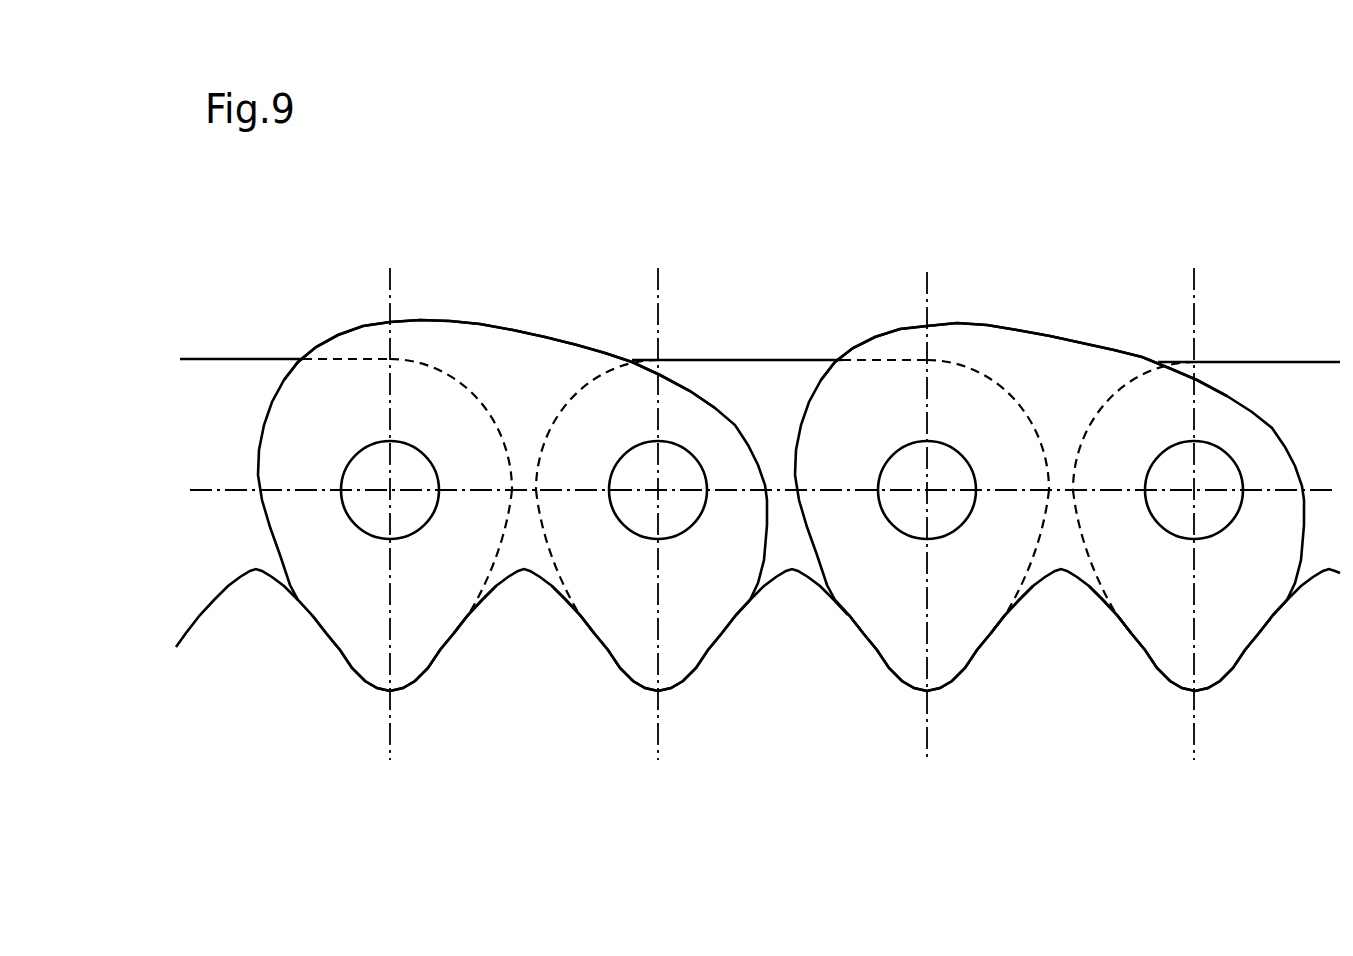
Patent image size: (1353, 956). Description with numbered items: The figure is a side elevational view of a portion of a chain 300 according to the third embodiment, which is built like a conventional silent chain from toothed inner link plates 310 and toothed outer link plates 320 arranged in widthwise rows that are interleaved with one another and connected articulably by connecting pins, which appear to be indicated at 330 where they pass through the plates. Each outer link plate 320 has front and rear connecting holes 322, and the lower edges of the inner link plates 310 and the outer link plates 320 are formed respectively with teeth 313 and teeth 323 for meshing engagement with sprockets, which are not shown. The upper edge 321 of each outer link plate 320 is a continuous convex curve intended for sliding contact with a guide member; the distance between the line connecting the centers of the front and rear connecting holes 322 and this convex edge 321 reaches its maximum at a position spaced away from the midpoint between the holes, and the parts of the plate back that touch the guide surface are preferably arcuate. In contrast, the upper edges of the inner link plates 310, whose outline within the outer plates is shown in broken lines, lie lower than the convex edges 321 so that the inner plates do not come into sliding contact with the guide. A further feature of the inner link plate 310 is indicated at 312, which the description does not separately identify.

The chain 300 is at (1280, 189).
The inner link plate 310 is at (778, 386).
The inner plate tooth flank 312 is at (677, 443).
The teeth 313 is at (645, 660).
The outer link plate 320 is at (531, 367).
The upper edge 321 is at (428, 320).
The connecting hole 322 is at (430, 521).
The teeth 323 is at (378, 657).
The connecting pin 330 is at (373, 515).